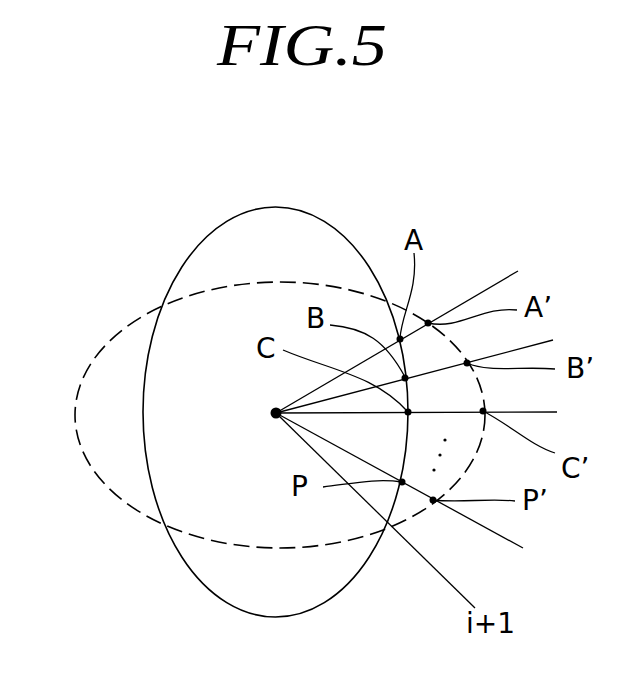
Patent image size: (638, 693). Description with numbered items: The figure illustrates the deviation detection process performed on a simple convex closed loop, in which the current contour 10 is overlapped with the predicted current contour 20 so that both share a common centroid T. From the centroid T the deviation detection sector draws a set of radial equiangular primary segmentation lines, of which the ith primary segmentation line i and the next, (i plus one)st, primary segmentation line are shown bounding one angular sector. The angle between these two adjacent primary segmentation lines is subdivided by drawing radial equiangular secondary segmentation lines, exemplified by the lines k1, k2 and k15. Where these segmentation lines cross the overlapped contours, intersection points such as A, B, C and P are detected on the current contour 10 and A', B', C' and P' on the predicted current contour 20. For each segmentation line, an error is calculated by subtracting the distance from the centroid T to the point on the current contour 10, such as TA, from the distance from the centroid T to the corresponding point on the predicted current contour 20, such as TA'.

The current contour 10 is at (318, 208).
The predicted current contour 20 is at (118, 503).
The common centroid T is at (264, 408).
The ith primary segmentation line i is at (405, 330).
The secondary segmentation line k1 is at (433, 367).
The secondary segmentation line k2 is at (438, 410).
The secondary segmentation line k15 is at (427, 491).